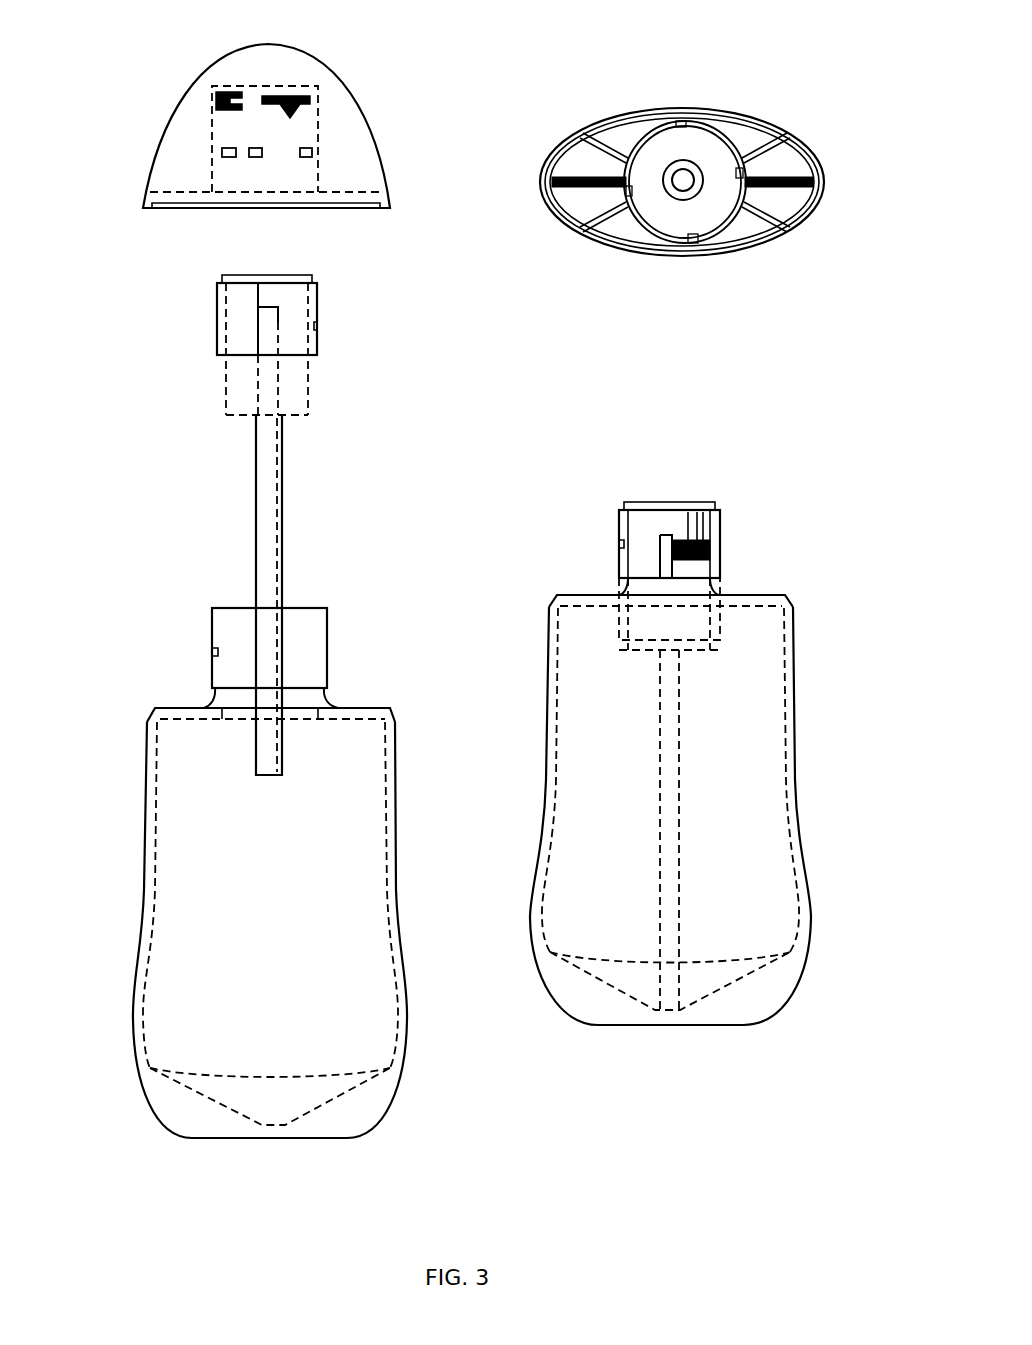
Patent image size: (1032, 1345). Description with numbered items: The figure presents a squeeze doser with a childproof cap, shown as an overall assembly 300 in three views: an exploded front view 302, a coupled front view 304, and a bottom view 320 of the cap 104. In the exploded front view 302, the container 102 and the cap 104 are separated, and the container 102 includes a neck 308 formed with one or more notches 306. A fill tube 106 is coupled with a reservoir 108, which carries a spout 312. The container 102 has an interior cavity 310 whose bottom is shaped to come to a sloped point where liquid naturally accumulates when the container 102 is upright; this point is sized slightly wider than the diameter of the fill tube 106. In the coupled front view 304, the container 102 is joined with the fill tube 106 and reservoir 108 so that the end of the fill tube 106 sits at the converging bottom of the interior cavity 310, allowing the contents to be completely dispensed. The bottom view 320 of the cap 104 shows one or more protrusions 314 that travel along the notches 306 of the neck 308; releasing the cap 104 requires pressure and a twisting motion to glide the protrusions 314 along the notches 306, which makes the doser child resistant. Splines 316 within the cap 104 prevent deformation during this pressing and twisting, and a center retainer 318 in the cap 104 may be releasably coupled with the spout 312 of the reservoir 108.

The container 102 is at (293, 990).
The cap 104 is at (362, 92).
The fill tube 106 is at (284, 490).
The reservoir 108 is at (308, 416).
The dispenser assembly 300 is at (505, 1237).
The exploded front view 302 is at (90, 705).
The coupled front view 304 is at (872, 737).
The notches 306 is at (212, 650).
The neck 308 is at (328, 676).
The interior cavity 310 is at (350, 1106).
The spout 312 is at (665, 526).
The protrusions 314 is at (256, 140).
The splines 316 is at (580, 174).
The center retainer 318 is at (698, 200).
The bottom view 320 is at (802, 101).